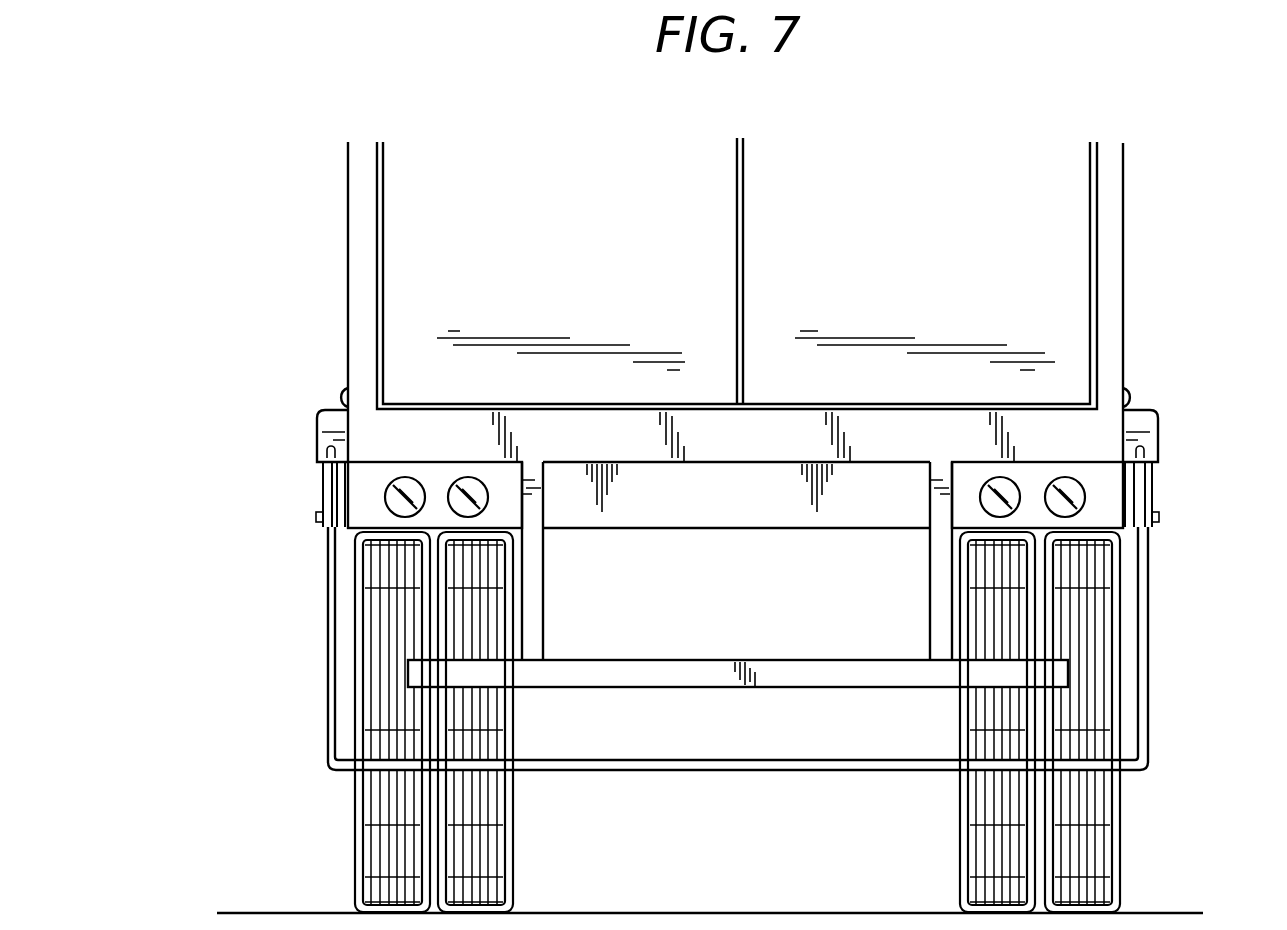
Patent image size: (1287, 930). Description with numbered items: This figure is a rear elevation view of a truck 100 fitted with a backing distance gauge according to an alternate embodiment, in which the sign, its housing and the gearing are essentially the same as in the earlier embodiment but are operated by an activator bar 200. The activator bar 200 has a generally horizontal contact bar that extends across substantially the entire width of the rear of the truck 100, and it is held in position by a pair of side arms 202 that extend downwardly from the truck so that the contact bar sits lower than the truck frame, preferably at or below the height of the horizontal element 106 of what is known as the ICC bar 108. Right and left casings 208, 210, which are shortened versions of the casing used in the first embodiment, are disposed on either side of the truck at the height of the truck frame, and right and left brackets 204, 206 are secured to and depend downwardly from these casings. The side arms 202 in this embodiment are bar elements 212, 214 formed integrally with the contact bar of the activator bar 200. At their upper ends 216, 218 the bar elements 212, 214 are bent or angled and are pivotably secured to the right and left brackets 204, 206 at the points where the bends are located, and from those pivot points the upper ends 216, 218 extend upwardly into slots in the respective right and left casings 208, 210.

The truck 100 is at (567, 227).
The horizontal element 106 is at (613, 665).
The ICC bar 108 is at (903, 663).
The activator bar 200 is at (718, 768).
The side arms 202 is at (330, 617).
The right bracket 204 is at (1128, 482).
The left bracket 206 is at (348, 482).
The right casing 208 is at (1158, 422).
The left casing 210 is at (318, 422).
The right bar element 212 is at (1148, 705).
The left bar element 214 is at (335, 703).
The upper end of right bar element 216 is at (1143, 490).
The upper end of left bar element 218 is at (327, 488).